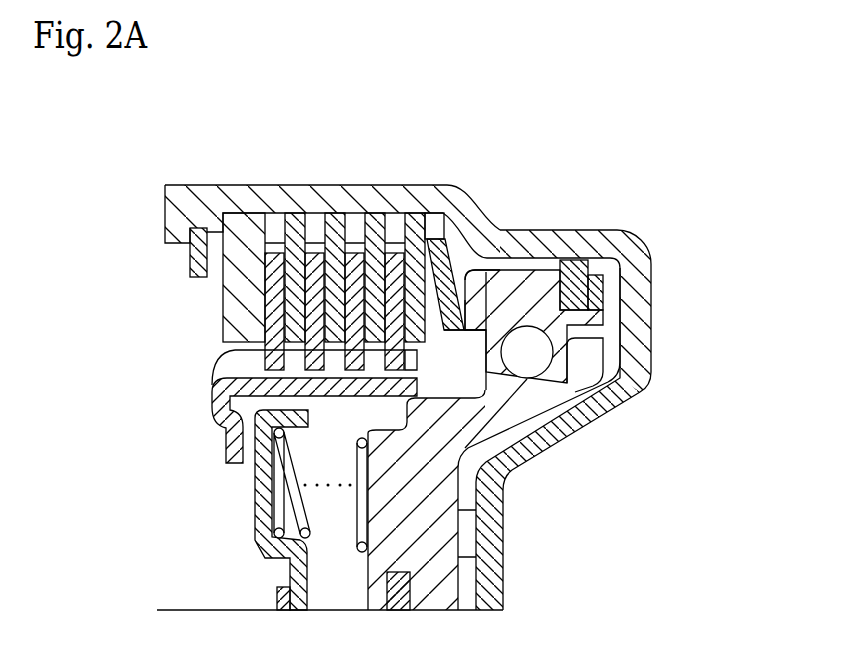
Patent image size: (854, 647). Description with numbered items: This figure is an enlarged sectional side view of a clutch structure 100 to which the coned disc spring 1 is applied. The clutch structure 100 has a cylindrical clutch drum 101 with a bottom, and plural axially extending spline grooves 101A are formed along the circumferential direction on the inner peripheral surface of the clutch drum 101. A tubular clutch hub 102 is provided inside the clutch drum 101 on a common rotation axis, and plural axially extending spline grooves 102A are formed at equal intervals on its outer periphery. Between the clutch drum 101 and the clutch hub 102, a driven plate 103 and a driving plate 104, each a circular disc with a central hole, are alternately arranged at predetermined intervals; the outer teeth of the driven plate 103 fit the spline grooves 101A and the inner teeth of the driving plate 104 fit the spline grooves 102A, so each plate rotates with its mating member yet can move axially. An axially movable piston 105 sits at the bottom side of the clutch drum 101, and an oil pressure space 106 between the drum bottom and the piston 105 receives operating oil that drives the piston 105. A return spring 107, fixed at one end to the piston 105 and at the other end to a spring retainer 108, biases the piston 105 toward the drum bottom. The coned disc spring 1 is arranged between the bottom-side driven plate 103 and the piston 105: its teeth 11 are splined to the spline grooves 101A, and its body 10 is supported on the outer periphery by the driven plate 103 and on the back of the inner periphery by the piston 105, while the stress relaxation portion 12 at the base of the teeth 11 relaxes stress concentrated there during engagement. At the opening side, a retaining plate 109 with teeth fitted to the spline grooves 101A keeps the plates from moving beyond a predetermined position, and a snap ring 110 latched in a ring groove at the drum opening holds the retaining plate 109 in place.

The coned disc spring 1 is at (538, 118).
The body 10 is at (454, 241).
The teeth 11 is at (441, 272).
The stress relaxation portion 12 is at (446, 256).
The clutch structure 100 is at (681, 169).
The clutch drum 101 is at (597, 247).
The spline grooves 101A is at (397, 230).
The clutch hub 102 is at (213, 412).
The spline grooves 102A is at (253, 364).
The driven plate 103 is at (418, 236).
The driving plate 104 is at (270, 312).
The piston 105 is at (447, 537).
The oil pressure space 106 is at (483, 460).
The return spring 107 is at (293, 495).
The spring retainer 108 is at (255, 542).
The retaining plate 109 is at (247, 226).
The snap ring 110 is at (190, 257).